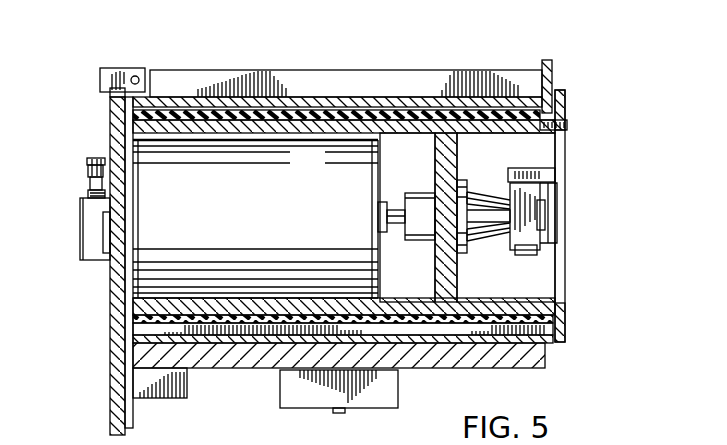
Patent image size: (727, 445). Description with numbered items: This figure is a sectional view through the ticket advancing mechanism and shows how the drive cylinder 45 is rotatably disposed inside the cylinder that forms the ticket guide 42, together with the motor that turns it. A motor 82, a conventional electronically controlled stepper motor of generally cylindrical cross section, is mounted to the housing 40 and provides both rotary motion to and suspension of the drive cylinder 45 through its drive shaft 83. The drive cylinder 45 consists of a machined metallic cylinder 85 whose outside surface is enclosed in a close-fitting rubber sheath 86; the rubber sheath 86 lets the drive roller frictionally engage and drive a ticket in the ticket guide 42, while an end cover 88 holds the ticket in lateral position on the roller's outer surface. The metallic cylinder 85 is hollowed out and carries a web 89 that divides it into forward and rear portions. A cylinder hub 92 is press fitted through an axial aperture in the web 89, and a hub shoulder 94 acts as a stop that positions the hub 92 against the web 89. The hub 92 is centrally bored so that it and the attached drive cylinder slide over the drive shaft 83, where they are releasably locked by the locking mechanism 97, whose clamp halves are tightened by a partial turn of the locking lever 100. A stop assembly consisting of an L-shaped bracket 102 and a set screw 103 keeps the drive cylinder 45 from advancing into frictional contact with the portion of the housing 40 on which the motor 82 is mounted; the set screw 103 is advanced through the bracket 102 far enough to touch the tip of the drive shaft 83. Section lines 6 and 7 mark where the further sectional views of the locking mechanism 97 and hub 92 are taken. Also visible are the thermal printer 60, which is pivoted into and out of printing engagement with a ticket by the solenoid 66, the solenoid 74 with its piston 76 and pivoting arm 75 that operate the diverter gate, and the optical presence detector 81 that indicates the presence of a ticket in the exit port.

The housing 40 is at (110, 127).
The ticket guide 42 is at (342, 107).
The drive cylinder 45 is at (425, 102).
The thermal printer 60 is at (517, 350).
The solenoid 66 is at (293, 388).
The solenoid 74 is at (88, 228).
The pivoting arm 75 is at (90, 173).
The piston 76 is at (93, 170).
The optical presence detector 81 is at (110, 68).
The motor 82 is at (146, 260).
The drive shaft 83 is at (397, 228).
The machined metallic cylinder 85 is at (375, 128).
The rubber sheath 86 is at (292, 115).
The end cover 88 is at (558, 99).
The web 89 is at (436, 148).
The cylinder hub 92 is at (478, 228).
The hub shoulder 94 is at (463, 187).
The locking mechanism 97 is at (543, 247).
The locking lever 100 is at (547, 173).
The L-shaped bracket 102 is at (552, 200).
The set screw 103 is at (563, 218).
The section line 6- 6 is at (527, 133).
The section line 7- 7 is at (363, 215).